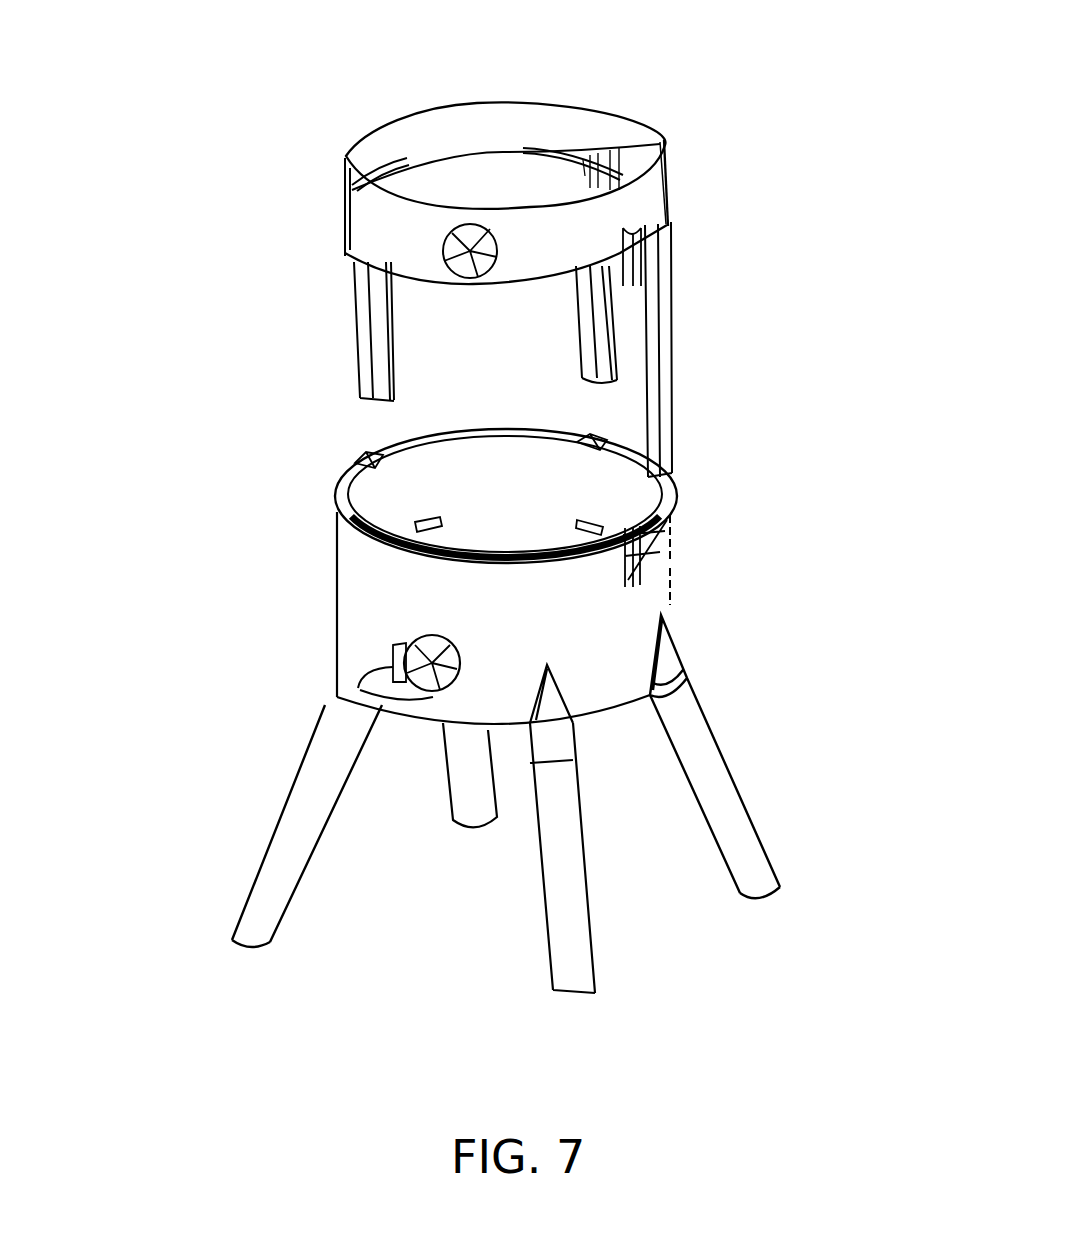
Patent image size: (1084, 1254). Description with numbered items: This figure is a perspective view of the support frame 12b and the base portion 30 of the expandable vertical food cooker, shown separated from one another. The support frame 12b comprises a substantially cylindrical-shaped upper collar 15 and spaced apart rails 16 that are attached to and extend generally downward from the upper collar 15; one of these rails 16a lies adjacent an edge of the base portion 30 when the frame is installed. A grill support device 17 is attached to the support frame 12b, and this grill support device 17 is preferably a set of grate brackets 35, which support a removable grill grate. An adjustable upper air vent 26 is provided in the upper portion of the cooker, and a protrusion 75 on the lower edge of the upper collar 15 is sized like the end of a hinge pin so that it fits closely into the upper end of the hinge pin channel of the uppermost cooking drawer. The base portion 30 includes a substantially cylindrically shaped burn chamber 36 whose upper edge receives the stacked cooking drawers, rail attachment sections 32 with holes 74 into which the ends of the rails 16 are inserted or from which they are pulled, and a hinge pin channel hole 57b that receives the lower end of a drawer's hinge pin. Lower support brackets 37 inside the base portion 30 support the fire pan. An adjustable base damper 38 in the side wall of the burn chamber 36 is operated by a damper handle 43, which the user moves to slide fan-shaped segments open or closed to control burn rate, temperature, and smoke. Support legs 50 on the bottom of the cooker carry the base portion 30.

The support frame 12b is at (694, 84).
The upper collar 15 is at (423, 113).
The grill support device 17 is at (583, 160).
The support brackets 35 is at (360, 148).
The upper air vent 26 is at (664, 160).
The protrusion 75 is at (627, 262).
The rails 16 is at (372, 330).
The rail 16a is at (668, 415).
The base portion 30 is at (803, 502).
The burn chamber 36 is at (522, 462).
The rail attachment sections 32 is at (664, 510).
The support brackets 37 is at (438, 517).
The holes 74 is at (345, 456).
The hinge pin channel hole 57b is at (663, 550).
The damper handle 43 is at (380, 703).
The base damper 38 is at (382, 705).
The support legs 50 is at (240, 930).